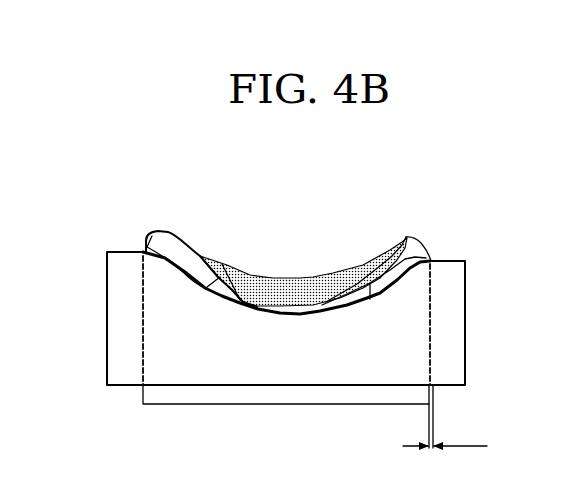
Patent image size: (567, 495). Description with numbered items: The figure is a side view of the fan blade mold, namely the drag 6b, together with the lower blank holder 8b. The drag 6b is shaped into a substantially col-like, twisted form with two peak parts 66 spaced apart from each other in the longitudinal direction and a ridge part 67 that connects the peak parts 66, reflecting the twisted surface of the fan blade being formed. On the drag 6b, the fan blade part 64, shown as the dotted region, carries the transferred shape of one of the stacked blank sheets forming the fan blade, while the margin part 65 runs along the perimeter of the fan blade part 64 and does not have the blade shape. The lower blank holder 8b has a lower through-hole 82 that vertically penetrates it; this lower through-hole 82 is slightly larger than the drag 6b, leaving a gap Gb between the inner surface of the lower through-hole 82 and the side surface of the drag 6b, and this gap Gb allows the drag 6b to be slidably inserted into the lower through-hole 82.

The fan blade mold (drag) 6b is at (423, 197).
The fan blade part 64 is at (332, 278).
The margin part 65 is at (420, 238).
The peak parts 66 is at (164, 230).
The ridge part 67 is at (269, 276).
The lower blank holder 8b is at (455, 261).
The lower through-hole 82 is at (432, 337).
The gap Gb is at (445, 437).